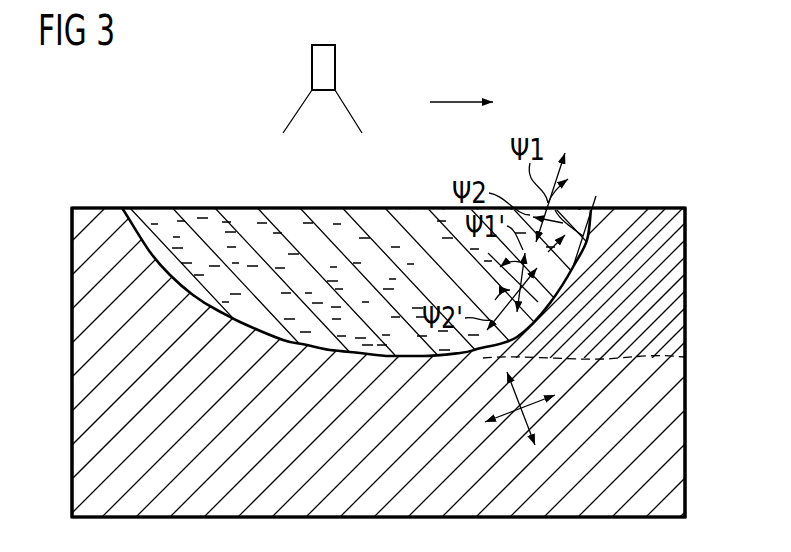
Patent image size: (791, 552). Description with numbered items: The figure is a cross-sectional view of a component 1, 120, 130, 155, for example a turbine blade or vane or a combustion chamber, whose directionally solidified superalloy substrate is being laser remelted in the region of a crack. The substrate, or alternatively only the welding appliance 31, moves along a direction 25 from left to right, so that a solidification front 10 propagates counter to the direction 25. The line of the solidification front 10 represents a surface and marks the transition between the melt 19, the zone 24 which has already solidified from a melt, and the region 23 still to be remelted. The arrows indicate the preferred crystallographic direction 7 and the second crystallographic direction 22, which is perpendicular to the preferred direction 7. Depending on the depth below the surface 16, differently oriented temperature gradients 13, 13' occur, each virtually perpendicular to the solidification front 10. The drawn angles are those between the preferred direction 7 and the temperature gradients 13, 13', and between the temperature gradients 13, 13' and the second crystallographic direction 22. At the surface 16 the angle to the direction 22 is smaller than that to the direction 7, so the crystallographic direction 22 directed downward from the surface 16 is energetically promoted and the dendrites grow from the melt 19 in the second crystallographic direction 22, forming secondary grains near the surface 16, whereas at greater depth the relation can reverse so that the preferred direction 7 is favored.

The component 1 is at (395, 269).
The turbine blade or vane 120 is at (632, 111).
The turbine blade or vane 130 is at (632, 111).
The combustion chamber 155 is at (632, 111).
The preferred crystallographic direction 7 is at (582, 205).
The solidification front 10 is at (395, 326).
The temperature gradient 13 is at (596, 212).
The temperature gradient 13' is at (487, 277).
The surface 16 is at (378, 172).
The melt 19 is at (198, 218).
The second crystallographic direction 22 is at (560, 250).
The region still to be remelted 23 is at (80, 285).
The zone already solidified from a melt 24 is at (677, 330).
The direction of movement 25 is at (455, 100).
The welding appliance 31 is at (312, 63).